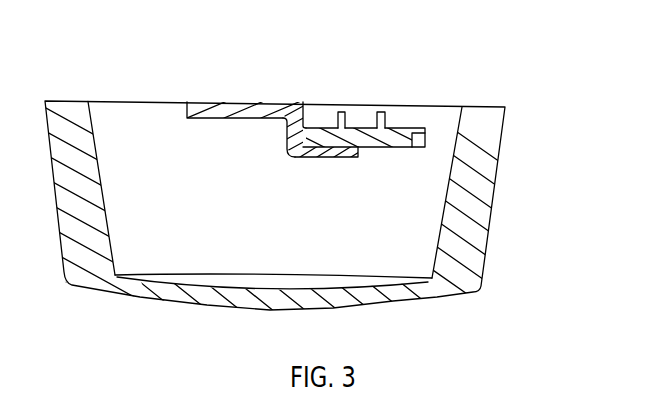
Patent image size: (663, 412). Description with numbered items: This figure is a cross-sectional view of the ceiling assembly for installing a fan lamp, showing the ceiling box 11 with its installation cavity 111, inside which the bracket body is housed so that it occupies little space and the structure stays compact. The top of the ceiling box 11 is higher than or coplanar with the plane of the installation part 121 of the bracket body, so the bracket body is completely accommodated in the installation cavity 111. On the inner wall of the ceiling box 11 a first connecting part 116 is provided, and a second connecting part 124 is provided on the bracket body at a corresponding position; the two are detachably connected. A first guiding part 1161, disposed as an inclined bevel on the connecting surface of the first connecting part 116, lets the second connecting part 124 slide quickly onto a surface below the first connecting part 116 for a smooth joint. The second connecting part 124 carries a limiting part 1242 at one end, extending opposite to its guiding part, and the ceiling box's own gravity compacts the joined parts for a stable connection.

The ceiling box 11 is at (505, 129).
The installation cavity 111 is at (172, 168).
The installation part 121 is at (223, 102).
The limiting part 1242 is at (310, 130).
The second connecting part 124 is at (358, 155).
The first connecting part 116 is at (390, 142).
The first guiding part 1161 is at (312, 150).